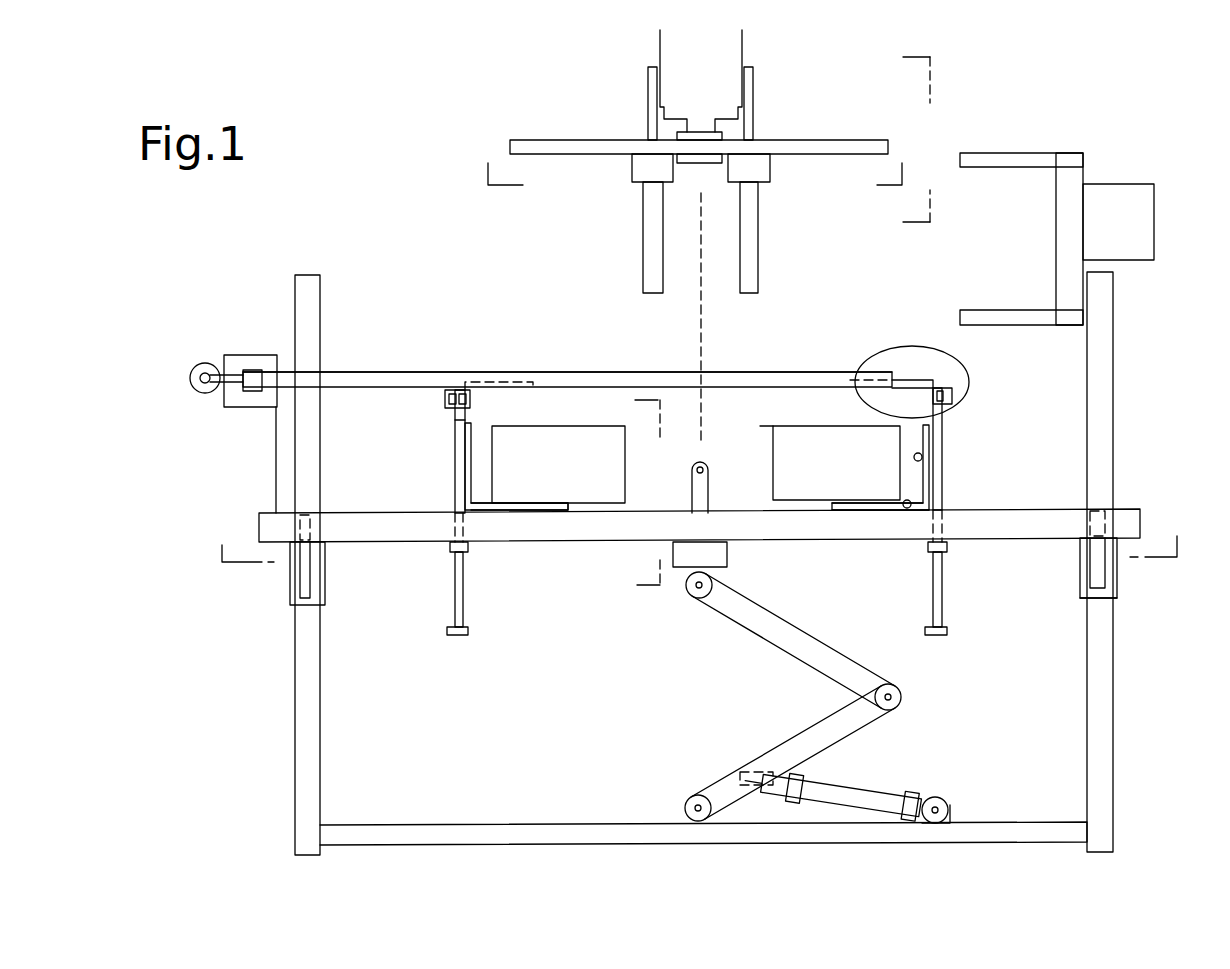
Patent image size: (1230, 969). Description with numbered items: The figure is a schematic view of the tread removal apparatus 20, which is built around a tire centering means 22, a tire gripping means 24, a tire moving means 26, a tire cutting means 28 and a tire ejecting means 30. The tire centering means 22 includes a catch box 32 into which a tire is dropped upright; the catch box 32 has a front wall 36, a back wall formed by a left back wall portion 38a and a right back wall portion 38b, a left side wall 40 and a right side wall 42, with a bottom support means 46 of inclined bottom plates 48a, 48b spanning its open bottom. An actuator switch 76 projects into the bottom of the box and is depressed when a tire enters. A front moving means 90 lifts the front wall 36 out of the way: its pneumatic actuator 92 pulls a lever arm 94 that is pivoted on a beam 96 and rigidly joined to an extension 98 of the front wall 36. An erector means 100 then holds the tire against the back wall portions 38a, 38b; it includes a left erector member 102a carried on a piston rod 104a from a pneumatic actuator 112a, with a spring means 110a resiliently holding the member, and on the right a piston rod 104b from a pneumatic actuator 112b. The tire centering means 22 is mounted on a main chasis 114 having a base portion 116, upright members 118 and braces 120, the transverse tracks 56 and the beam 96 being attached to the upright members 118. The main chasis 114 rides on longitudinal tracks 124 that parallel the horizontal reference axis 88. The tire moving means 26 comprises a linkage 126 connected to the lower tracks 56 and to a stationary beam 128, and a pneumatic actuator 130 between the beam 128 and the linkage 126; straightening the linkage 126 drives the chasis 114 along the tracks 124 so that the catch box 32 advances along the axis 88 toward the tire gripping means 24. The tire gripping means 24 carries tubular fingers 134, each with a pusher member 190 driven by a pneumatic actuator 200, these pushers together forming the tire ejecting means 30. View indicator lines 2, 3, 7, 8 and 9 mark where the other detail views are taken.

The tread removal apparatus 20 is at (208, 268).
The tire centering means 22 is at (240, 458).
The tire gripping means 24 is at (520, 225).
The tire moving means 26 is at (578, 683).
The tire cutting means 28 is at (1085, 118).
The tire ejecting means 30 is at (625, 170).
The catch box 32 is at (755, 397).
The front wall 36 is at (620, 371).
The left back wall portion 38a is at (483, 512).
The right back wall portion 38b is at (903, 512).
The left side wall 40 is at (478, 430).
The right side wall 42 is at (922, 457).
The bottom support means 46 is at (750, 437).
The bottom plate 48a is at (580, 476).
The bottom plate 48b is at (858, 476).
The transverse tracks 56 is at (362, 529).
The actuator switch 76 is at (710, 470).
The horizontal reference axis 88 is at (704, 332).
The front moving means 90 is at (207, 400).
The pneumatic actuator 92 is at (198, 365).
The lever arm 94 is at (238, 407).
The beam 96 is at (252, 355).
The extension 98 is at (395, 372).
The erector means 100 is at (445, 398).
The left erector member 102a is at (493, 380).
The piston rod 104a is at (455, 468).
The piston rod 104b is at (947, 404).
The spring means 110a is at (455, 422).
The pneumatic actuator 112a is at (455, 597).
The pneumatic actuator 112b is at (942, 590).
The main chasis 114 is at (1118, 588).
The base portion 116 is at (290, 604).
The upright members 118 is at (325, 519).
The braces 120 is at (300, 588).
The longitudinal tracks 124 is at (296, 707).
The linkage 126 is at (727, 617).
The stationary beam 128 is at (467, 825).
The pneumatic actuator 130 is at (866, 780).
The fingers 134 is at (643, 262).
The pusher member 190 is at (636, 182).
The pneumatic actuator 200 is at (648, 105).
The section line 2 is at (701, 537).
The section line 3 is at (636, 499).
The detail circle 7 is at (879, 352).
The section line 8 is at (906, 140).
The section line 9 is at (696, 159).